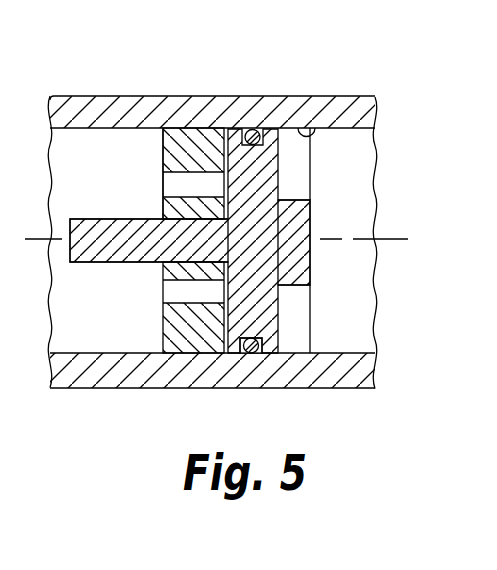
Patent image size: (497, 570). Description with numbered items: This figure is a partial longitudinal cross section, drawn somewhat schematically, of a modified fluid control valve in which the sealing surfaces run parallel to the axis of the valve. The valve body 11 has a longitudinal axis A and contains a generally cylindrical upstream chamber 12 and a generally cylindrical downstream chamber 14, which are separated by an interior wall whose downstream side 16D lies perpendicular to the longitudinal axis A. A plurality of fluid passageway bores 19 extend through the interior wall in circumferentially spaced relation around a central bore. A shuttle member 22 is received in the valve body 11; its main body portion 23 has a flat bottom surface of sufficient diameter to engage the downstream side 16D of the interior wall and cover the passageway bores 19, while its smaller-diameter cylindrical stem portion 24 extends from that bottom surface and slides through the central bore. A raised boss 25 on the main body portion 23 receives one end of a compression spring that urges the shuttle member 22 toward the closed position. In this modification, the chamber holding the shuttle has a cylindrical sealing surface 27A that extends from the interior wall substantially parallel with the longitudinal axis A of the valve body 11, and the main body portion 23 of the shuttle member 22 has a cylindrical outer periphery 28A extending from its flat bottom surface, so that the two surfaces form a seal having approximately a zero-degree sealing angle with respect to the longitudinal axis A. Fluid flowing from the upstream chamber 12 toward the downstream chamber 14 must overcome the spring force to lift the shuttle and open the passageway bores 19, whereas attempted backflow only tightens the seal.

The valve body 11 is at (94, 98).
The upstream chamber 12 is at (349, 177).
The downstream chamber 14 is at (98, 163).
The downstream side of interior wall 16D is at (157, 131).
The fluid passageway bores 19 is at (176, 185).
The shuttle member 22 is at (242, 241).
The main body portion 23 is at (262, 239).
The stem portion 24 is at (102, 224).
The raised boss 25 is at (296, 285).
The cylindrical sealing surface 27A is at (306, 133).
The cylindrical outer periphery 28A is at (236, 354).
The longitudinal axis A is at (383, 240).